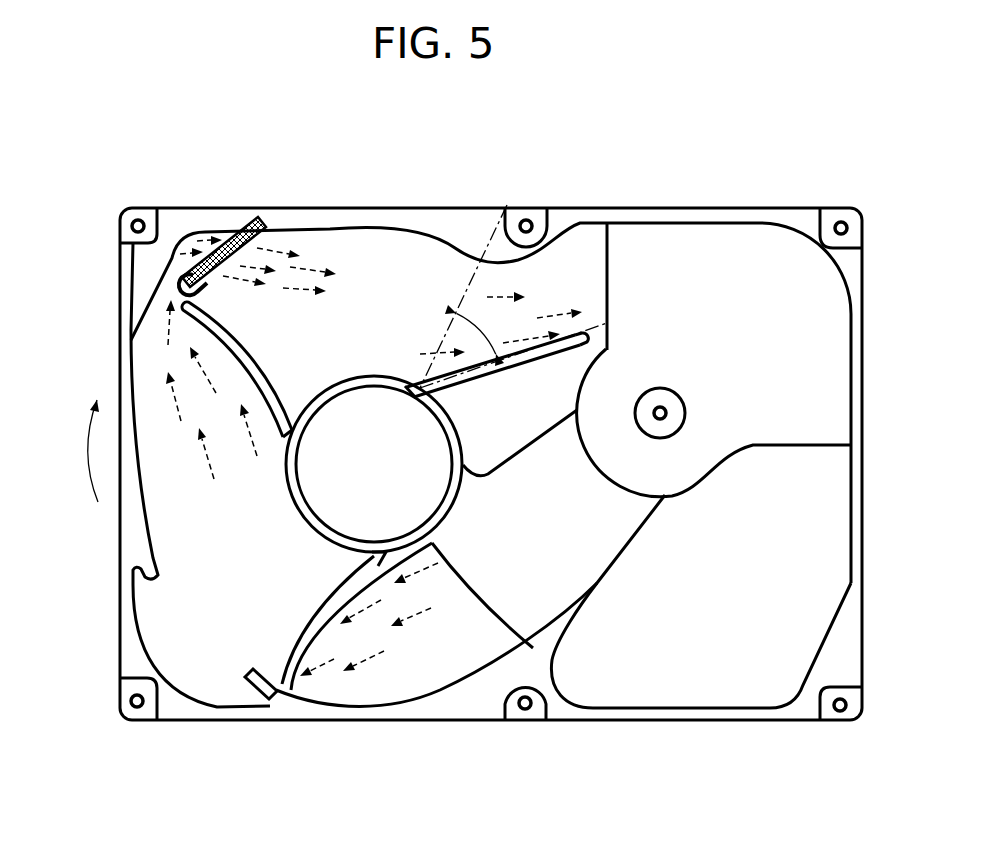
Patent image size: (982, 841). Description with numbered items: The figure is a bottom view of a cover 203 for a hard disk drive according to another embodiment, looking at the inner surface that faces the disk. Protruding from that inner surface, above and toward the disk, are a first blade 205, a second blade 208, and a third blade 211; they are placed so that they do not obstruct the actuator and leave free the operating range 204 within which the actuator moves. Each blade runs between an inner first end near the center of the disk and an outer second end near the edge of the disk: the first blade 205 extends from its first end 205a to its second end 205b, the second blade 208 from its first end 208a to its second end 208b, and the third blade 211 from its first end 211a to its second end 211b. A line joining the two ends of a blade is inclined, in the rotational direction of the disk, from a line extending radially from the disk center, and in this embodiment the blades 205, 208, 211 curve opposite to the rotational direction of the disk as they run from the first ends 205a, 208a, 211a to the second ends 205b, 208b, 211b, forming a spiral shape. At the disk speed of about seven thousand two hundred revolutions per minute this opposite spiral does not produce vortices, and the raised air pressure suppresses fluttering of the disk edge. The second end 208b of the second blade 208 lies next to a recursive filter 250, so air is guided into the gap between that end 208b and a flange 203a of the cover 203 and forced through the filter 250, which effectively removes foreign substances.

The cover 203 is at (799, 222).
The flange 203a is at (123, 307).
The operating range 204 is at (550, 565).
The first blade 205 is at (533, 357).
The first end of the first blade 205a is at (420, 390).
The second end of the first blade 205b is at (585, 335).
The second blade 208 is at (254, 366).
The first end of the second blade 208a is at (288, 438).
The second end of the second blade 208b is at (175, 308).
The third blade 211 is at (310, 623).
The first end of the third blade 211a is at (388, 557).
The second end of the third blade 211b is at (273, 700).
The recursive filter 250 is at (255, 225).